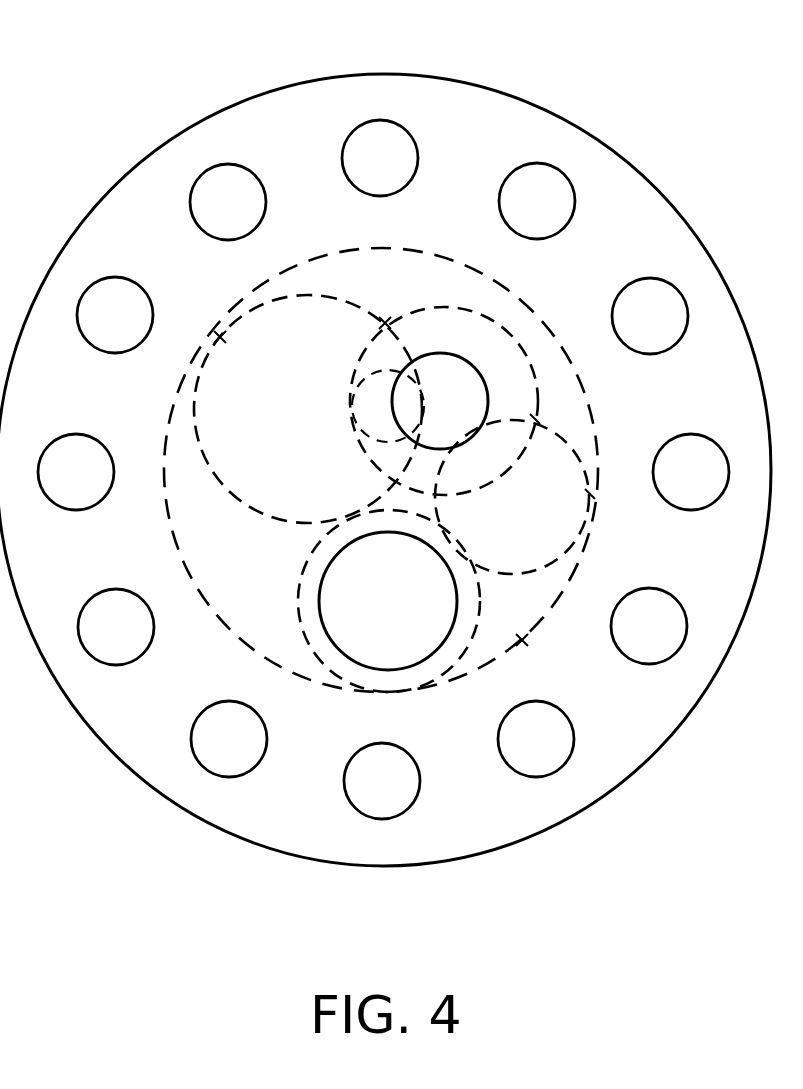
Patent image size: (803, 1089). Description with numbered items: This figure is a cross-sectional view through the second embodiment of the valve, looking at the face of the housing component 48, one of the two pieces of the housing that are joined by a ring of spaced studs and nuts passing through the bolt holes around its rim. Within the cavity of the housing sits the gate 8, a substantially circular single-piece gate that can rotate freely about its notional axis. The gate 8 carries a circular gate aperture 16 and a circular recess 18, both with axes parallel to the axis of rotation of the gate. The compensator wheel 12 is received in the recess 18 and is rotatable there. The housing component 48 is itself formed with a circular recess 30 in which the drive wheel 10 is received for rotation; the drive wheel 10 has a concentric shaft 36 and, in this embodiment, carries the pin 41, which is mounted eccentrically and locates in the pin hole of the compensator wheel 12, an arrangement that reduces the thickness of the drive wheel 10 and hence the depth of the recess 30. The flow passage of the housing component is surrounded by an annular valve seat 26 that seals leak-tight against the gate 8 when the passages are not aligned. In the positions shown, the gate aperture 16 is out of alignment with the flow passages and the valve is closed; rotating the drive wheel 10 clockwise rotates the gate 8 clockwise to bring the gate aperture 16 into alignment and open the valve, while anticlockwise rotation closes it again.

The gate 8 is at (500, 634).
The drive wheel 10 is at (492, 347).
The compensator wheel 12 is at (257, 358).
The gate aperture 16 is at (567, 492).
The recess 18 is at (223, 493).
The valve seat 26 is at (397, 680).
The recess 30 is at (533, 363).
The shaft 36 is at (460, 412).
The pin 41 is at (360, 403).
The housing component 48 is at (388, 119).